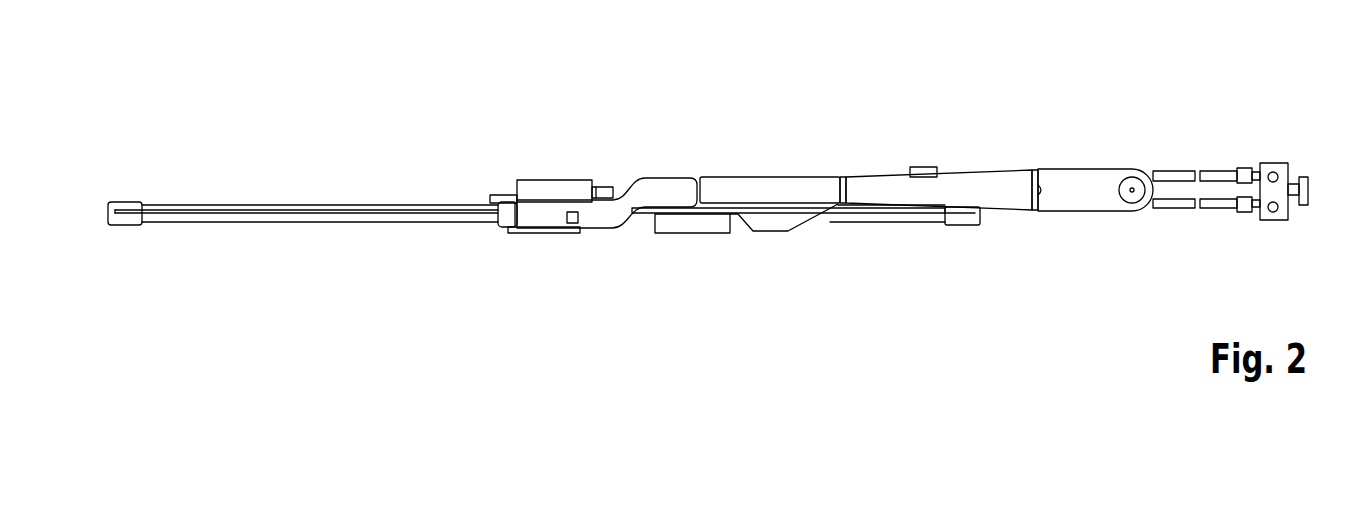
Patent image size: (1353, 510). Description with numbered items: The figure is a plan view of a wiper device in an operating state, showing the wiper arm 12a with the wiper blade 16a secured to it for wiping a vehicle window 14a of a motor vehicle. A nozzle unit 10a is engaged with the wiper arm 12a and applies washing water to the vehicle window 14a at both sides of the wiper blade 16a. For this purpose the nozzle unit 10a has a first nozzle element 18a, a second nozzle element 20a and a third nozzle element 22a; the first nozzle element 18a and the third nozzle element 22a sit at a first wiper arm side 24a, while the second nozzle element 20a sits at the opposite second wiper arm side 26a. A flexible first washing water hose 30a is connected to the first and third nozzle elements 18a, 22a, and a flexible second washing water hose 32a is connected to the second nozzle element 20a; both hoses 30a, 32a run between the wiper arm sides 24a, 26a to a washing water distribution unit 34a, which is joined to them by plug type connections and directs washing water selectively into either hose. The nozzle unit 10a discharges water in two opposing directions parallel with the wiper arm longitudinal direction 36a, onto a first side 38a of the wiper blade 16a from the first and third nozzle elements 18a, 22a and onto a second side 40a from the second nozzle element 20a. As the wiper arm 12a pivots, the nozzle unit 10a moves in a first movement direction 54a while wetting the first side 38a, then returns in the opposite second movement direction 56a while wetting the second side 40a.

The nozzle unit 10a is at (476, 99).
The wiper arm 12a is at (1000, 180).
The vehicle window 14a is at (435, 147).
The wiper blade 16a is at (316, 205).
The first nozzle element 18a is at (532, 185).
The second nozzle element 20a is at (668, 233).
The third nozzle element 22a is at (930, 167).
The first wiper arm side 24a is at (870, 177).
The second wiper arm side 26a is at (876, 213).
The first washing water hose 30a is at (1178, 175).
The second washing water hose 32a is at (1180, 208).
The washing water distribution unit 34a is at (1278, 136).
The wiper arm longitudinal direction 36a is at (449, 262).
The first side 38a is at (716, 104).
The second side 40a is at (726, 303).
The first movement direction 54a is at (591, 85).
The second movement direction 56a is at (591, 262).